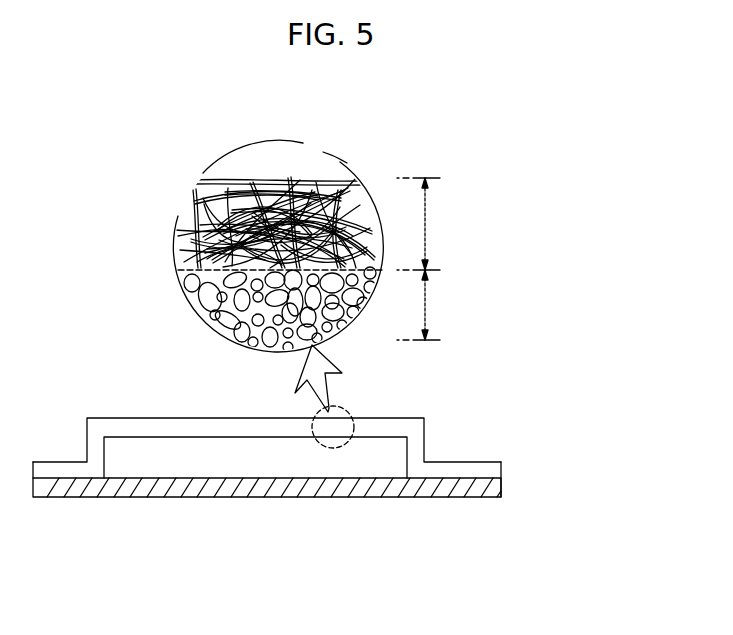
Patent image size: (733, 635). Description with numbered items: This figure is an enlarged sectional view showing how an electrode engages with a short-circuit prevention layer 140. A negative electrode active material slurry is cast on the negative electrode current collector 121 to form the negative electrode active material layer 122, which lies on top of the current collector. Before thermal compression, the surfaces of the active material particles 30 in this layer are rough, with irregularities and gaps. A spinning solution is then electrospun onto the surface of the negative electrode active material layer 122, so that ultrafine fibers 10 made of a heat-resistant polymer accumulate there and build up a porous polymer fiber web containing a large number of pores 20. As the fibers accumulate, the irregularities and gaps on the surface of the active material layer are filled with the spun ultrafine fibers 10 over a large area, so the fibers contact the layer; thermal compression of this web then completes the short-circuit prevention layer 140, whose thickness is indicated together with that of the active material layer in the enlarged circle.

The ultrafine fibers 10 is at (327, 183).
The pores 20 is at (232, 230).
The active material particles 30 is at (228, 307).
The negative electrode current collector 121 is at (458, 492).
The negative electrode active material layer 122 is at (387, 458).
The short-circuit prevention layer 140 is at (490, 468).